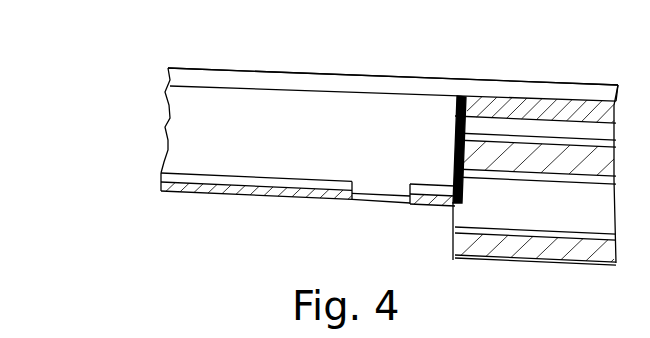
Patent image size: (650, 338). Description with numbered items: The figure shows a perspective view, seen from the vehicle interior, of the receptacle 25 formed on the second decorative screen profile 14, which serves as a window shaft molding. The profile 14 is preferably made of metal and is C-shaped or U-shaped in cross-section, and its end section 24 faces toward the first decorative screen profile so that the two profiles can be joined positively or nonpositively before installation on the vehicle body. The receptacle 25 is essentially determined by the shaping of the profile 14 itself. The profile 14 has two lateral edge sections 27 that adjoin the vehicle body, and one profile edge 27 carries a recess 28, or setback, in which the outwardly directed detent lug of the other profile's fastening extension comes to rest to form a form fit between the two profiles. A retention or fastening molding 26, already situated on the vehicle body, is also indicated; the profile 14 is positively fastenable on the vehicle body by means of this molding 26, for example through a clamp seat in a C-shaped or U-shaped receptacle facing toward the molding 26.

The second decorative screen profile 14 is at (388, 122).
The end section 24 is at (211, 102).
The receptacle 25 is at (124, 132).
The retention or fastening molding 26 is at (560, 238).
The profile edge 27 is at (222, 193).
The recess 28 is at (381, 193).